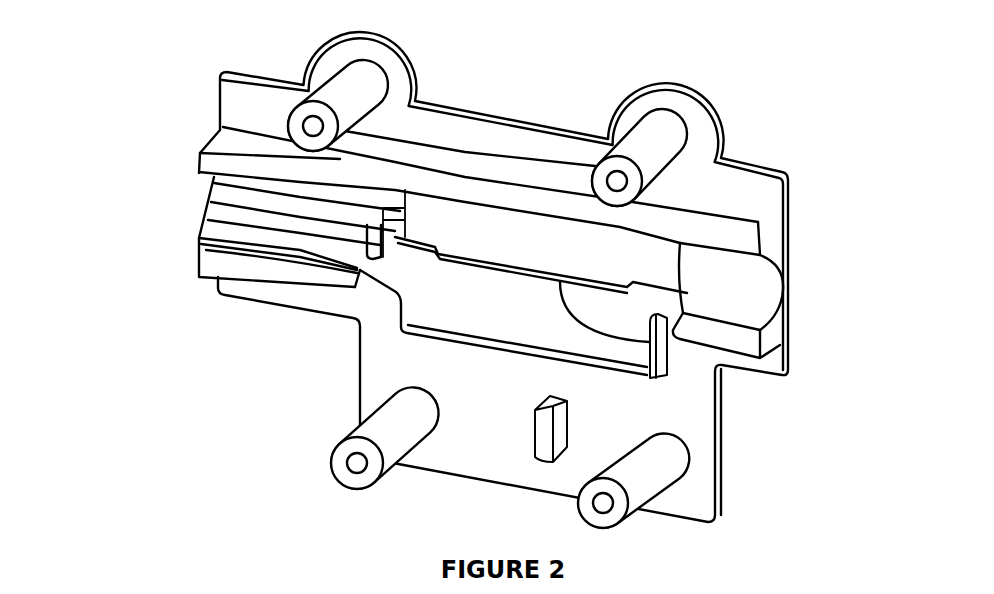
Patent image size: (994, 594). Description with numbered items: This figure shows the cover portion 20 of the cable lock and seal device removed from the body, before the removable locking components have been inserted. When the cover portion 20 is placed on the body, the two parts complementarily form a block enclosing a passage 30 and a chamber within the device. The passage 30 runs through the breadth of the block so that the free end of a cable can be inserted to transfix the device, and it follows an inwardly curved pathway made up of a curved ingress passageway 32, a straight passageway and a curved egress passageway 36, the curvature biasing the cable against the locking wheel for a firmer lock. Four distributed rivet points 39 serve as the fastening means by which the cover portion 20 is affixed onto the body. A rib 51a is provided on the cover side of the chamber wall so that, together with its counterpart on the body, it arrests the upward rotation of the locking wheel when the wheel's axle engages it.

The cover portion 20 is at (772, 136).
The passage 30 is at (490, 237).
The curved ingress passageway 32 is at (235, 198).
The curved egress passageway 36 is at (723, 277).
The rivet points 39 is at (347, 80).
The rib 51a is at (686, 350).